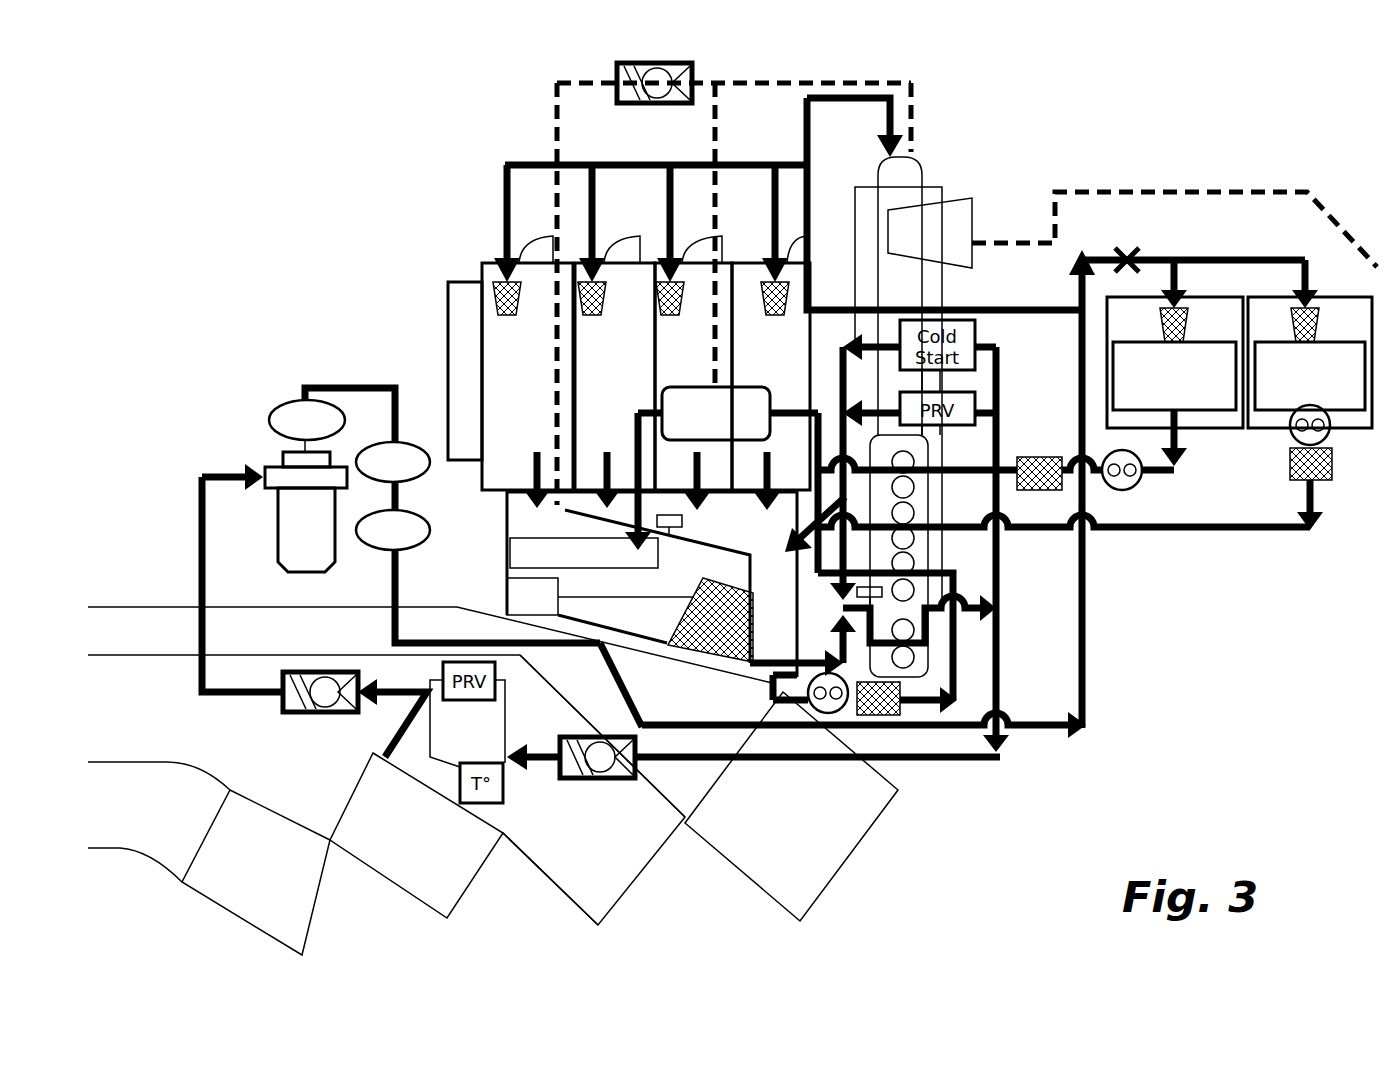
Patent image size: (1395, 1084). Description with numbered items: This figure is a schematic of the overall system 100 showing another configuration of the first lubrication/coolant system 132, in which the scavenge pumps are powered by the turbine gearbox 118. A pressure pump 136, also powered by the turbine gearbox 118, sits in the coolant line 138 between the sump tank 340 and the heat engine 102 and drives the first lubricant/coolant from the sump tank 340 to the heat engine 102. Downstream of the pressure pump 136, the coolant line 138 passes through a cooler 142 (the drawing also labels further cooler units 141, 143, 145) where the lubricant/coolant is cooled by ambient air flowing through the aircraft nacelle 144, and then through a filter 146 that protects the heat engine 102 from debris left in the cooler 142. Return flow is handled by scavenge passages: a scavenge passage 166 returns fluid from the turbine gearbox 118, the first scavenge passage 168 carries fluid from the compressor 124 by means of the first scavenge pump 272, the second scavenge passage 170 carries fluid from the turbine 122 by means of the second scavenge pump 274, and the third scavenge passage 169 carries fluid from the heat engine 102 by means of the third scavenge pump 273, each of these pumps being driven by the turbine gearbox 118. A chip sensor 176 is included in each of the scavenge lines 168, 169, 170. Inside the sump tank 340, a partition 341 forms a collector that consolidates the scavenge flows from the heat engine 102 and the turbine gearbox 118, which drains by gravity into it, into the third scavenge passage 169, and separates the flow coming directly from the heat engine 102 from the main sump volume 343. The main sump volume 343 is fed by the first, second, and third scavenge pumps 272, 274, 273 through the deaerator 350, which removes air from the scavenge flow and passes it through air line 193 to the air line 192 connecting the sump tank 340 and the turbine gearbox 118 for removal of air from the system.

The gas turbine engine 100 is at (300, 107).
The first lubrication/coolant system 132 is at (594, 790).
The heat engine 102 is at (470, 292).
The turbine gearbox 118 is at (922, 180).
The turbine 122 is at (1327, 308).
The compressor 124 is at (1205, 308).
The pressure pump 136 is at (908, 665).
The coolant line 138 is at (1003, 575).
The type 2 oil cooler 141 is at (318, 925).
The cooler 142 is at (463, 880).
The oil cooler 143 is at (643, 870).
The aircraft nacelle 144 is at (90, 628).
The oil cooler 145 is at (840, 867).
The filter 146 is at (278, 545).
The scavenge passage 166 is at (810, 545).
The first scavenge passage 168 is at (1017, 463).
The third scavenge passage 169 is at (958, 660).
The second scavenge passage 170 is at (1176, 530).
The chip sensor 176 is at (1135, 486).
The air line 192 is at (765, 83).
The air line 193 is at (718, 130).
The first scavenge pump 272 is at (915, 460).
The third scavenge pump 273 is at (915, 566).
The second scavenge pump 274 is at (915, 518).
The sump tank 340 is at (507, 520).
The partition 341 is at (707, 545).
The main sump volume 343 is at (710, 620).
The deaerator 350 is at (748, 405).